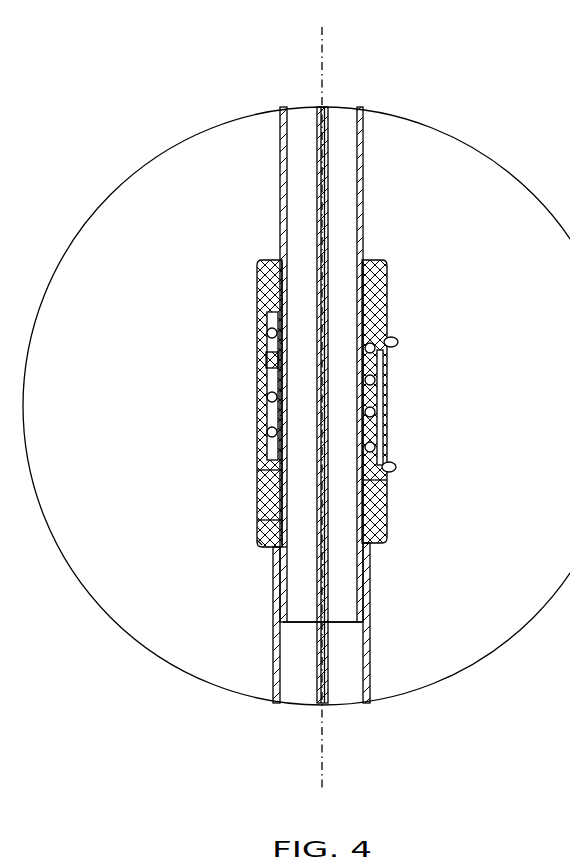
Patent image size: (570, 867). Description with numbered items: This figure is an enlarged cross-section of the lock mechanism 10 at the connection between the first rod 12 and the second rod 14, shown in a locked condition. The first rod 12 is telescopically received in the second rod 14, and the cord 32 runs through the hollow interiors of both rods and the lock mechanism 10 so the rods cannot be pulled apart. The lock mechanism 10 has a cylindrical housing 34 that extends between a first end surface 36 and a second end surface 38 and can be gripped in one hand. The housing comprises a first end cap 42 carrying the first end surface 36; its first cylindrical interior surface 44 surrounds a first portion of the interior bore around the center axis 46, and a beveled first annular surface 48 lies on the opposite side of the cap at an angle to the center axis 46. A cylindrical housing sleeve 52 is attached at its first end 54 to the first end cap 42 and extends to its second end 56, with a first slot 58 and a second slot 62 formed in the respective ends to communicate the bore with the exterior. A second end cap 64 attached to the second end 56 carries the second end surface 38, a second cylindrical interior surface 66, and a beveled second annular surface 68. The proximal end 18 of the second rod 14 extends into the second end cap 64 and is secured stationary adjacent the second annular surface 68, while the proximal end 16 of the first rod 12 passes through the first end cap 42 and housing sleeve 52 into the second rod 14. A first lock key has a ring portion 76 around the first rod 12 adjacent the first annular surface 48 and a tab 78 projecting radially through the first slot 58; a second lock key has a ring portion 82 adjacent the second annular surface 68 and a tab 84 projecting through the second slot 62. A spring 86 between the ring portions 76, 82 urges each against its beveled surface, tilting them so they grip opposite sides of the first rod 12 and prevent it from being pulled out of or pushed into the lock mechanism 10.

The lock mechanism 10 is at (252, 538).
The first rod 12 is at (362, 127).
The second rod 14 is at (275, 685).
The proximal end of the first rod 16 is at (347, 622).
The proximal end of the second rod 18 is at (382, 487).
The cord 32 is at (317, 133).
The housing 34 is at (390, 277).
The first end surface 36 is at (373, 257).
The second end surface 38 is at (373, 548).
The first end cap 42 is at (257, 290).
The first cylindrical interior surface 44 is at (290, 283).
The center axis 46 is at (322, 28).
The first annular surface 48 is at (393, 348).
The housing sleeve 52 is at (257, 387).
The first end of the housing sleeve 54 is at (267, 338).
The second end of the housing sleeve 56 is at (260, 507).
The first slot 58 is at (390, 363).
The second slot 62 is at (390, 443).
The second end cap 64 is at (253, 523).
The second cylindrical interior surface 66 is at (280, 532).
The second annular surface 68 is at (390, 457).
The ring portion of the first lock key 76 is at (273, 365).
The tab of the first lock key 78 is at (395, 342).
The ring portion of the second lock key 82 is at (260, 447).
The tab of the second lock key 84 is at (393, 470).
The spring 86 is at (260, 410).